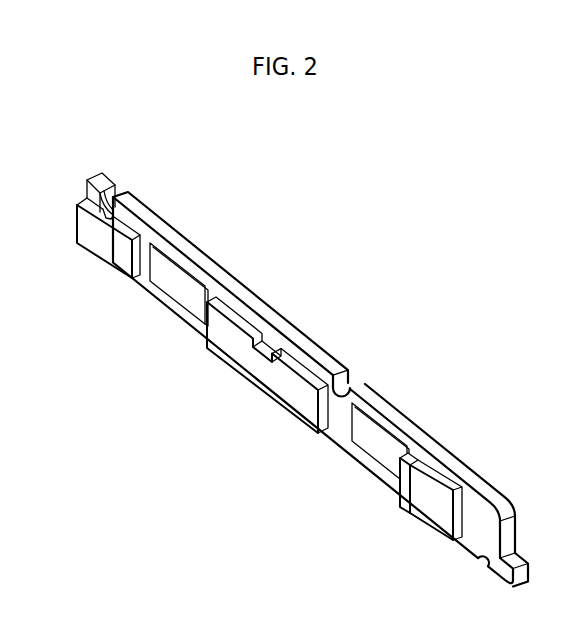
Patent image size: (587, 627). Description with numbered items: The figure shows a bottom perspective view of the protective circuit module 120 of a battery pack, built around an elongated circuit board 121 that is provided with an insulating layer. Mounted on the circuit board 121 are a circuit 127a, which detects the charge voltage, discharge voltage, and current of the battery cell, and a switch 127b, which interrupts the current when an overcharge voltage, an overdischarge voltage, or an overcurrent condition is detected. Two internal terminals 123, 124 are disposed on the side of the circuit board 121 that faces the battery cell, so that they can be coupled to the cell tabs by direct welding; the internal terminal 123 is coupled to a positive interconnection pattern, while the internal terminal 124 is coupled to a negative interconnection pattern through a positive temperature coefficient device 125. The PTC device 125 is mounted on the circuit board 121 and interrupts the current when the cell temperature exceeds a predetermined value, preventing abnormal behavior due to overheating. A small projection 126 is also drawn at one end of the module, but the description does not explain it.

The protective circuit module 120 is at (463, 420).
The circuit board 121 is at (212, 268).
The internal terminal 123 is at (175, 293).
The internal terminal 124 is at (380, 455).
The positive temperature coefficient (PTC) device 125 is at (430, 511).
The hook protrusion 126 is at (110, 187).
The circuit 127a is at (110, 255).
The switch 127b is at (273, 388).